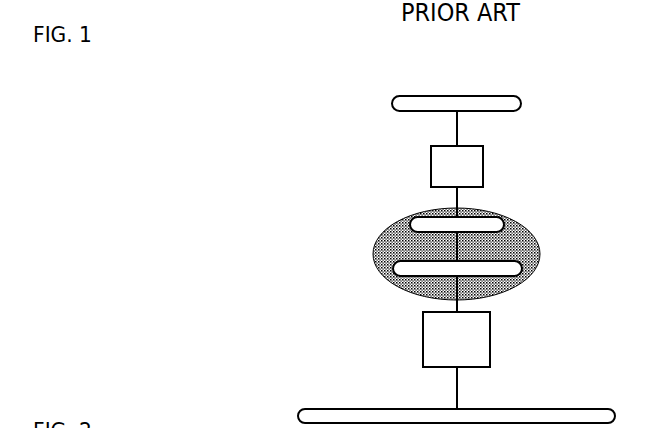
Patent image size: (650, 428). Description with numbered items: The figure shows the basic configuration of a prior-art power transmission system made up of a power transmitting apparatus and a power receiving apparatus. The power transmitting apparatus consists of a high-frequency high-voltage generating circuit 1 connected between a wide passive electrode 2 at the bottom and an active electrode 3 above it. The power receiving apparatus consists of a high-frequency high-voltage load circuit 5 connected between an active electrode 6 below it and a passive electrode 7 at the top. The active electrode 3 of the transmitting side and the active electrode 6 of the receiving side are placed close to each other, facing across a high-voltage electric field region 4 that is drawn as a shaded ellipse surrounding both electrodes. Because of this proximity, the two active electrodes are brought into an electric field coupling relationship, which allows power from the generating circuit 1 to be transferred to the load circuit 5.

The high-frequency high-voltage generating circuit 1 is at (490, 338).
The passive electrode 2 is at (573, 409).
The active electrode 3 is at (517, 275).
The high-voltage electric field region 4 is at (528, 245).
The high-frequency high-voltage load circuit 5 is at (483, 166).
The active electrode 6 is at (497, 223).
The passive electrode 7 is at (500, 96).